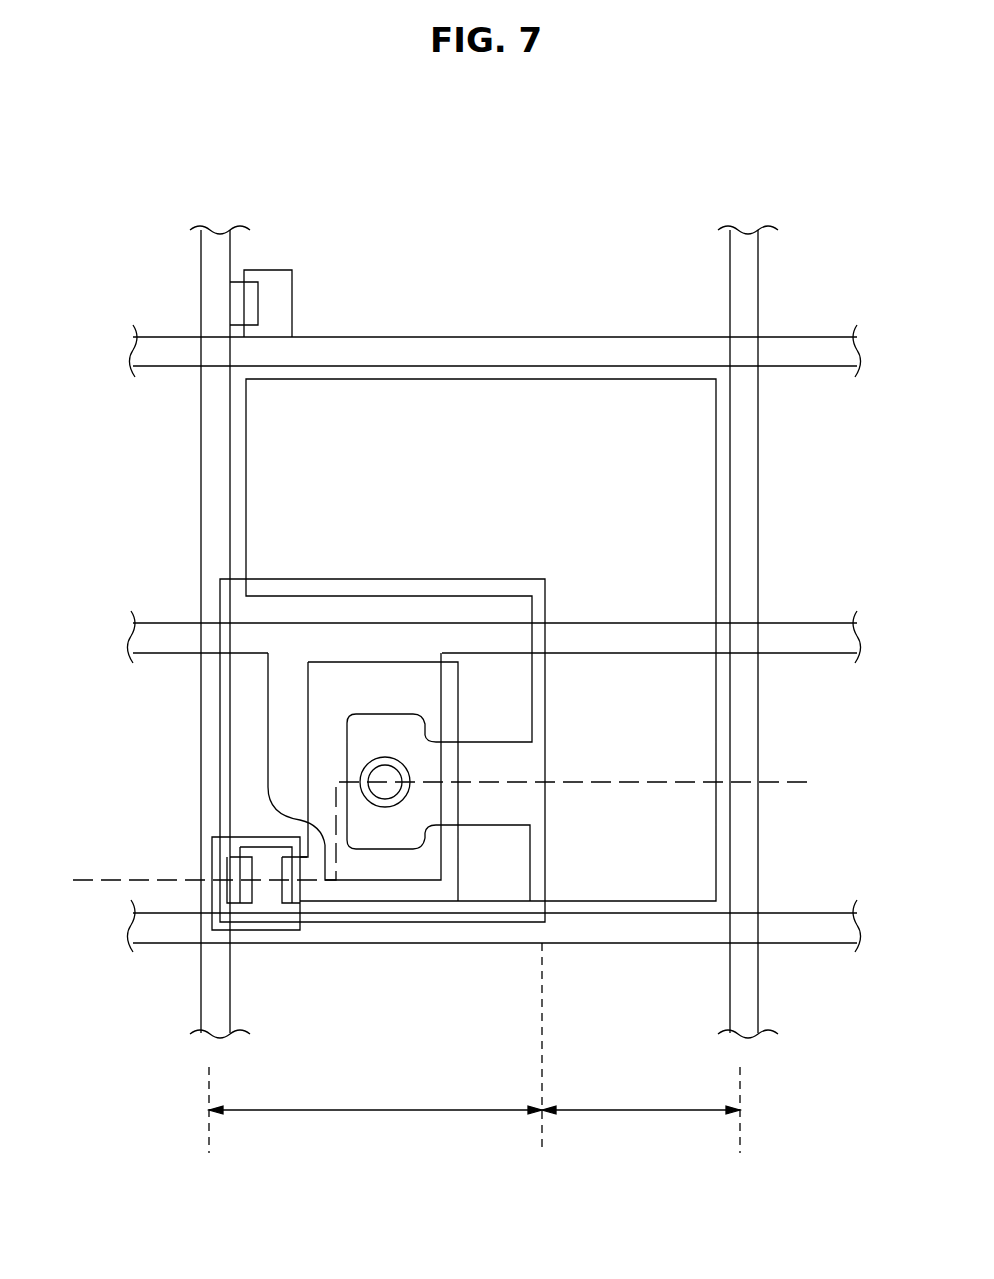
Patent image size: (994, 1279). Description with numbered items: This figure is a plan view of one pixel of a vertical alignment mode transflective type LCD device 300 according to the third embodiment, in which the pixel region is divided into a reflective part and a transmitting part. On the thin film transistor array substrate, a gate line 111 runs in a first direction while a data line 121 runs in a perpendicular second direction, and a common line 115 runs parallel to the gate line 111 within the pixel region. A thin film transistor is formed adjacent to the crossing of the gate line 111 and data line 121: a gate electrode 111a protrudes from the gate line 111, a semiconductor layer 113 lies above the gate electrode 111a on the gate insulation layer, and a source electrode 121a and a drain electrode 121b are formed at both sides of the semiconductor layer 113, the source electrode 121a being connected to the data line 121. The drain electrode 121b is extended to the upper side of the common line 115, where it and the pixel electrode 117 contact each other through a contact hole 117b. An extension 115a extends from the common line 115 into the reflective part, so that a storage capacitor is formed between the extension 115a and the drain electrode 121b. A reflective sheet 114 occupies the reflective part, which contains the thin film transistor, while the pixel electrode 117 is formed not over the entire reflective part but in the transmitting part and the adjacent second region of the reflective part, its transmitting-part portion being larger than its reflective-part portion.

The transflective type LCD device 300 is at (515, 171).
The data line 121 is at (215, 540).
The common line 115 is at (806, 634).
The gate line 111 is at (597, 943).
The reflective sheet 114 is at (375, 578).
The pixel electrode 117 is at (716, 491).
The contact hole 117b is at (397, 783).
The extension 115a is at (268, 712).
The gate electrode 111a is at (263, 847).
The semiconductor layer 113 is at (213, 880).
The source electrode 121a is at (250, 905).
The drain electrode 121b is at (282, 905).